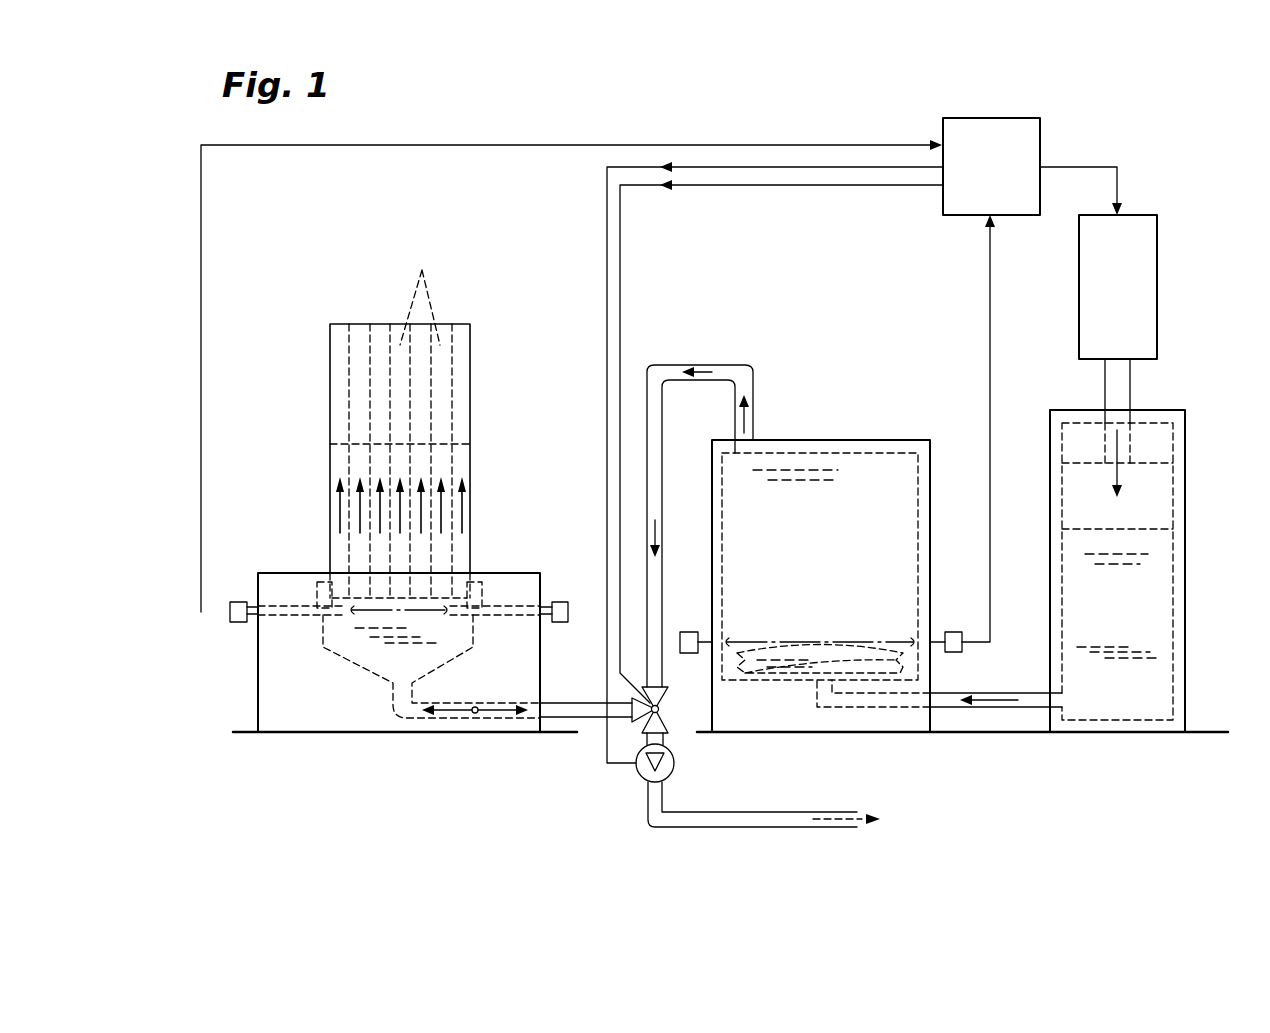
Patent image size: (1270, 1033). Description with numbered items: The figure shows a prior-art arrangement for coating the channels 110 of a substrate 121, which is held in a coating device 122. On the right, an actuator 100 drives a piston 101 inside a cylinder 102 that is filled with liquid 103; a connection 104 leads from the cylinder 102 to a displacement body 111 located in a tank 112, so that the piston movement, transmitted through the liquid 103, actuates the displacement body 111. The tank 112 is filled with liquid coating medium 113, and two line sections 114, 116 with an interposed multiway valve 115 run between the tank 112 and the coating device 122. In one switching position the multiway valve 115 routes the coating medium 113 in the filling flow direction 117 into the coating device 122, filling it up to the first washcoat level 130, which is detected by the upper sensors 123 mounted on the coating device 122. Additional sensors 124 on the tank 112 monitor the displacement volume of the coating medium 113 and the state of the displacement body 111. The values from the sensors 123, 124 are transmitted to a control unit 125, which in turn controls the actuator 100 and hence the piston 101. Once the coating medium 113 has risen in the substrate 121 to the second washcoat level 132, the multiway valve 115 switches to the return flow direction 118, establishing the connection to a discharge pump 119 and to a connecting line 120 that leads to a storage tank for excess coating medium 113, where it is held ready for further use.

The actuator 100 is at (1103, 300).
The piston 101 is at (1157, 507).
The cylinder 102 is at (1193, 605).
The liquid 103 is at (783, 665).
The connection 104 is at (1000, 707).
The channels 110 is at (420, 293).
The displacement body 111 is at (826, 640).
The tank 112 is at (896, 431).
The coating medium 113 is at (382, 642).
The line section 114 is at (700, 370).
The multiway valve 115 is at (673, 717).
The line section 116 is at (484, 698).
The filling flow direction 117 is at (452, 712).
The return flow direction 118 is at (852, 812).
The discharge pump 119 is at (636, 778).
The connecting line 120 is at (737, 812).
The substrate 121 is at (322, 335).
The coating device 122 is at (250, 668).
The upper sensor 123 is at (240, 600).
The additional sensors 124 is at (743, 635).
The control unit 125 is at (977, 180).
The first washcoat level 130 is at (386, 606).
The second washcoat level 132 is at (360, 440).